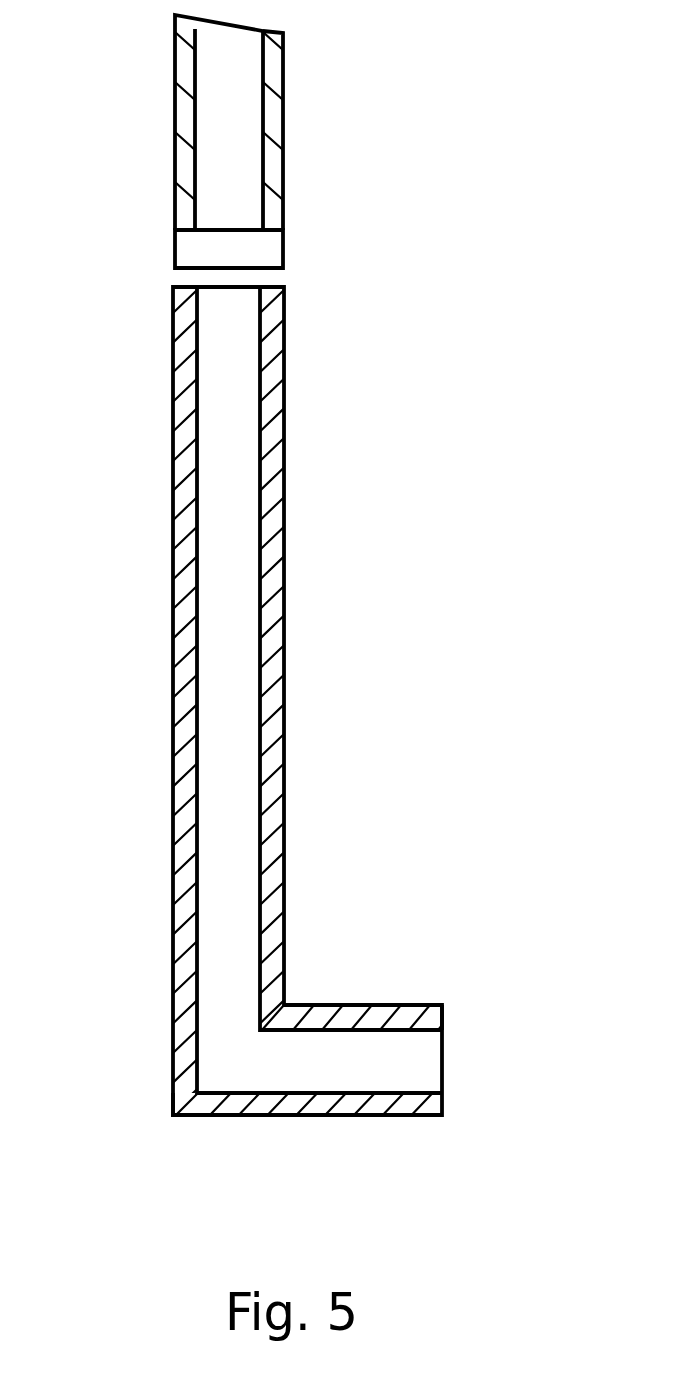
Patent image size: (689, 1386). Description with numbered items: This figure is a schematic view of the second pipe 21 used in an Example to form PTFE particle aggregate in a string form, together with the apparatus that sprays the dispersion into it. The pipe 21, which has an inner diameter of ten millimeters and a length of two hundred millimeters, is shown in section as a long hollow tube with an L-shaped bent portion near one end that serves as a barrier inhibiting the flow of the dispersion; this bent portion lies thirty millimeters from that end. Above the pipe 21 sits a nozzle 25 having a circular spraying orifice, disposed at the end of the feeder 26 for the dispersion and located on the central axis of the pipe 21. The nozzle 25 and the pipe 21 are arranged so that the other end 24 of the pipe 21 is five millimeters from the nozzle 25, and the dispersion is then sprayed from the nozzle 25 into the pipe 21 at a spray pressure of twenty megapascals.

The second pipe 21 is at (317, 687).
The other end of the pipe 24 is at (245, 284).
The nozzle 25 is at (255, 245).
The feeder 26 is at (240, 103).